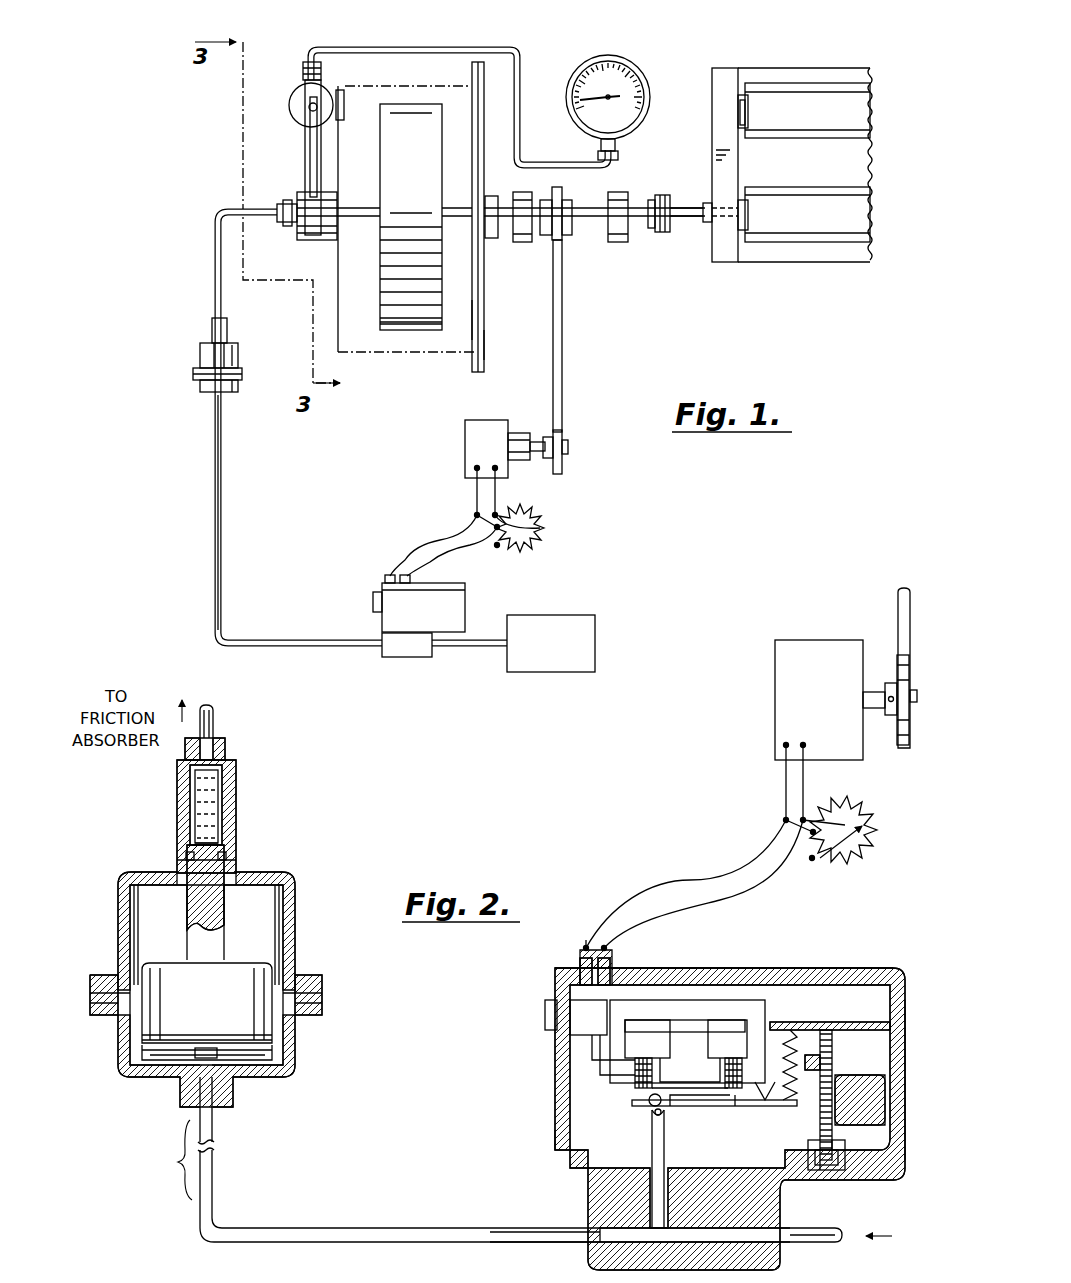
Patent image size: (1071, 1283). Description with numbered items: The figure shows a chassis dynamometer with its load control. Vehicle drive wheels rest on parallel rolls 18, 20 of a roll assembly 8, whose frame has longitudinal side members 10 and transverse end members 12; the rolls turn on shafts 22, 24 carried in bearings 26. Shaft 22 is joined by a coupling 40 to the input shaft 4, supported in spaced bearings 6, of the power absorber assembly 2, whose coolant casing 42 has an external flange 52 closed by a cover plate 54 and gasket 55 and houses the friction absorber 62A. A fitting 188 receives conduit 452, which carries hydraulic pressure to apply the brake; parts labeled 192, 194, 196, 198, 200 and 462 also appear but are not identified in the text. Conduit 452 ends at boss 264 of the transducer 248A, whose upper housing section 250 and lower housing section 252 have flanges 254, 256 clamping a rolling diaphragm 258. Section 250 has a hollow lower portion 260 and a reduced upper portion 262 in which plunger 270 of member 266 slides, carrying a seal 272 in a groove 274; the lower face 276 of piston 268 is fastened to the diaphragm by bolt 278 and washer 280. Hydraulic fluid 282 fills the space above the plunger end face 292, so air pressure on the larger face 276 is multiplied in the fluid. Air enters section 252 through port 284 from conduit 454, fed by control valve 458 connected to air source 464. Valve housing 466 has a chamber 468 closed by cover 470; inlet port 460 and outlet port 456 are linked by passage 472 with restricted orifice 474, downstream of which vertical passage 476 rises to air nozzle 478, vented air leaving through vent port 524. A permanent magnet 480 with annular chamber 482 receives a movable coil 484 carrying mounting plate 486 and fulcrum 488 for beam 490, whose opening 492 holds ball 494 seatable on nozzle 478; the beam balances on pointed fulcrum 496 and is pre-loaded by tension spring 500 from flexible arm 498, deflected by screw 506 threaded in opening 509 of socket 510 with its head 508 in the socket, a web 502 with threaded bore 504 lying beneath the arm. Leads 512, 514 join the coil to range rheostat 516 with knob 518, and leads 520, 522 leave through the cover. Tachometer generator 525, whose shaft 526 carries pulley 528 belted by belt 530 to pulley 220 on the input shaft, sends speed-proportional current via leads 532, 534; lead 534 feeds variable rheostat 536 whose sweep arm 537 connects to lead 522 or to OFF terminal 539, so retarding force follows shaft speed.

In FIG. 1, the power absorber assembly 2 is at (452, 172).
In FIG. 1, the input shaft 4 is at (596, 218).
In FIG. 1, the bearings 6 is at (520, 243).
In FIG. 1, the roll assembly 8 is at (791, 160).
In FIG. 1, the longitudinal side members 10 is at (800, 72).
In FIG. 1, the transverse end members 12 is at (722, 260).
In FIG. 1, the roll 18 is at (808, 202).
In FIG. 1, the roll 20 is at (798, 132).
In FIG. 1, the shaft 22 is at (692, 212).
In FIG. 1, the shaft 24 is at (748, 122).
In FIG. 1, the bearings 26 is at (738, 110).
In FIG. 1, the coupling 40 is at (662, 200).
In FIG. 1, the coolant-receiving casing 42 is at (486, 312).
In FIG. 1, the external flange 52 is at (472, 366).
In FIG. 1, the cover plate 54 is at (486, 333).
In FIG. 1, the gasket 55 is at (486, 357).
In FIG. 1, the friction absorber 62A is at (410, 334).
In FIG. 1, the fitting 188 is at (288, 228).
In FIG. 1, the sensor body 192 is at (297, 107).
In FIG. 1, the sensor orifice 194 is at (303, 120).
In FIG. 1, the nut 196 is at (305, 64).
In FIG. 1, the pressure gauge 198 is at (650, 78).
In FIG. 1, the sensor arm 200 is at (307, 162).
In FIG. 1, the pulley 220 is at (564, 200).
In FIG. 1, the air pressure-hydraulic pressure transducer 248A is at (218, 368).
In FIG. 2, the air pressure-hydraulic pressure transducer 248A is at (287, 807).
In FIG. 1, the upper housing section 250 is at (203, 350).
In FIG. 2, the upper housing section 250 is at (294, 902).
In FIG. 1, the lower housing section 252 is at (203, 388).
In FIG. 2, the lower housing section 252 is at (296, 1030).
In FIG. 1, the flange 254 is at (193, 364).
In FIG. 2, the flange 254 is at (306, 975).
In FIG. 1, the flange 256 is at (242, 386).
In FIG. 2, the flange 256 is at (323, 1005).
In FIG. 1, the flexible rolling diaphragm 258 is at (241, 372).
In FIG. 2, the flexible rolling diaphragm 258 is at (323, 992).
In FIG. 2, the hollow lower portion 260 is at (134, 918).
In FIG. 1, the reduced hollow upper portion 262 is at (212, 326).
In FIG. 2, the reduced hollow upper portion 262 is at (236, 782).
In FIG. 2, the boss 264 is at (226, 752).
In FIG. 2, the member 266 is at (240, 946).
In FIG. 2, the lower piston 268 is at (176, 963).
In FIG. 2, the upper plunger 270 is at (187, 908).
In FIG. 2, the seal 272 is at (188, 856).
In FIG. 2, the groove 274 is at (226, 853).
In FIG. 2, the lower face 276 is at (272, 1052).
In FIG. 2, the bolt 278 is at (225, 1060).
In FIG. 2, the washer 280 is at (180, 1065).
In FIG. 2, the hydraulic fluid 282 is at (190, 790).
In FIG. 2, the port 284 is at (213, 1125).
In FIG. 2, the upper end face 292 is at (194, 845).
In FIG. 1, the conduit 452 is at (217, 262).
In FIG. 2, the conduit 452 is at (214, 720).
In FIG. 1, the conduit 454 is at (218, 530).
In FIG. 2, the conduit 454 is at (213, 1160).
In FIG. 2, the outlet port 456 is at (582, 1242).
In FIG. 1, the air pressure control valve 458 is at (415, 609).
In FIG. 2, the air pressure control valve 458 is at (719, 1085).
In FIG. 2, the inlet port 460 is at (788, 1230).
In FIG. 1, the air supply line 462 is at (476, 648).
In FIG. 2, the air supply line 462 is at (800, 1242).
In FIG. 1, the air pressure source 464 is at (547, 615).
In FIG. 1, the housing 466 is at (460, 606).
In FIG. 2, the housing 466 is at (906, 1070).
In FIG. 2, the chamber 468 is at (810, 968).
In FIG. 1, the cover 470 is at (435, 583).
In FIG. 2, the cover 470 is at (815, 968).
In FIG. 2, the passage 472 is at (750, 1242).
In FIG. 2, the restricted orifice 474 is at (700, 1190).
In FIG. 2, the vertical passage 476 is at (664, 1180).
In FIG. 2, the air nozzle 478 is at (652, 1128).
In FIG. 2, the permanent magnet 480 is at (693, 1000).
In FIG. 2, the annular chamber 482 is at (726, 1025).
In FIG. 2, the magnetic coil 484 is at (660, 1045).
In FIG. 2, the mounting plate 486 is at (690, 1086).
In FIG. 2, the fulcrum 488 is at (735, 1108).
In FIG. 2, the beam 490 is at (720, 1106).
In FIG. 2, the opening 492 is at (652, 1107).
In FIG. 2, the ball 494 is at (645, 1100).
In FIG. 2, the pointed fulcrum 496 is at (765, 1106).
In FIG. 2, the flexible arm 498 is at (846, 1022).
In FIG. 2, the tension spring 500 is at (785, 1045).
In FIG. 2, the web 502 is at (834, 1060).
In FIG. 2, the threaded bore 504 is at (836, 1048).
In FIG. 2, the screw 506 is at (842, 1105).
In FIG. 2, the head 508 is at (822, 1168).
In FIG. 2, the opening 509 is at (838, 1143).
In FIG. 2, the socket 510 is at (840, 1160).
In FIG. 2, the lead 512 is at (580, 1068).
In FIG. 2, the lead 514 is at (592, 1050).
In FIG. 2, the range adjusting rheostat 516 is at (575, 1028).
In FIG. 1, the external operating knob 518 is at (375, 592).
In FIG. 2, the external operating knob 518 is at (550, 1000).
In FIG. 1, the lead 520 is at (420, 546).
In FIG. 2, the lead 520 is at (695, 880).
In FIG. 1, the lead 522 is at (444, 548).
In FIG. 2, the lead 522 is at (737, 885).
In FIG. 2, the vent port 524 is at (560, 1160).
In FIG. 1, the tachometer generator 525 is at (487, 426).
In FIG. 2, the tachometer generator 525 is at (821, 645).
In FIG. 1, the shaft 526 is at (568, 445).
In FIG. 2, the shaft 526 is at (873, 692).
In FIG. 1, the pulley 528 is at (568, 425).
In FIG. 2, the pulley 528 is at (906, 735).
In FIG. 1, the belt 530 is at (563, 290).
In FIG. 2, the belt 530 is at (908, 600).
In FIG. 1, the lead 532 is at (505, 491).
In FIG. 2, the lead 532 is at (786, 780).
In FIG. 2, the lead 534 is at (803, 778).
In FIG. 1, the variable rheostat 536 is at (541, 520).
In FIG. 2, the variable rheostat 536 is at (884, 826).
In FIG. 1, the sweep arm 537 is at (545, 530).
In FIG. 2, the sweep arm 537 is at (822, 850).
In FIG. 1, the OFF terminal 539 is at (476, 522).
In FIG. 2, the OFF terminal 539 is at (812, 833).